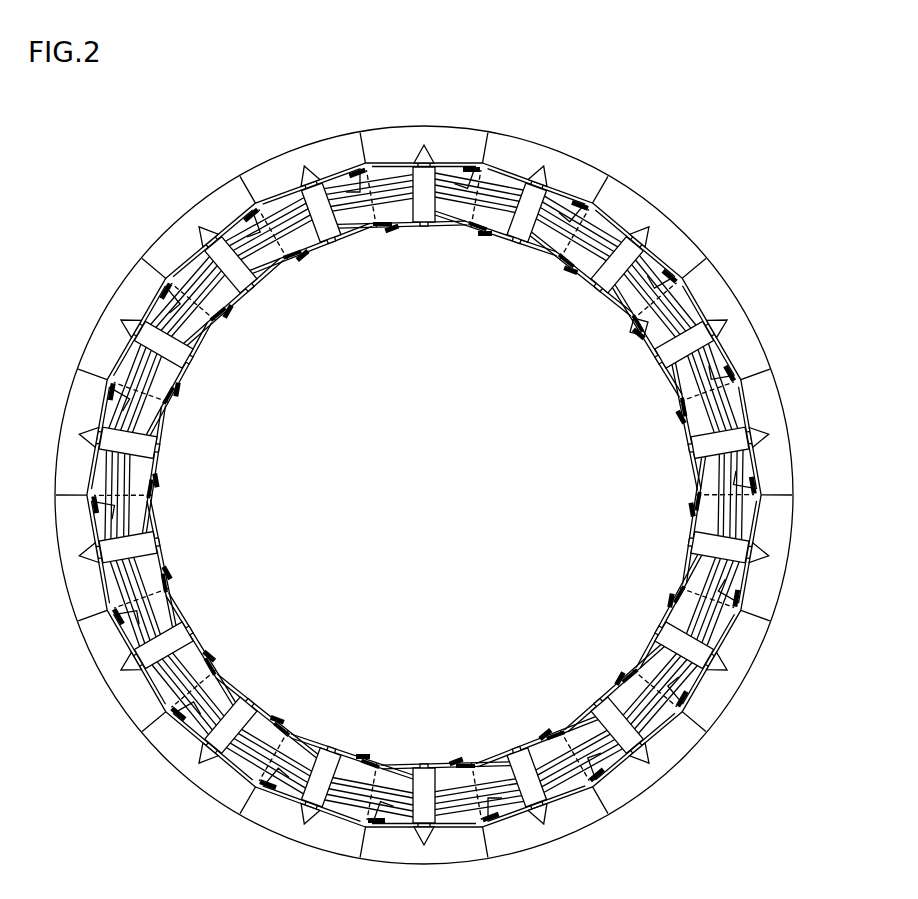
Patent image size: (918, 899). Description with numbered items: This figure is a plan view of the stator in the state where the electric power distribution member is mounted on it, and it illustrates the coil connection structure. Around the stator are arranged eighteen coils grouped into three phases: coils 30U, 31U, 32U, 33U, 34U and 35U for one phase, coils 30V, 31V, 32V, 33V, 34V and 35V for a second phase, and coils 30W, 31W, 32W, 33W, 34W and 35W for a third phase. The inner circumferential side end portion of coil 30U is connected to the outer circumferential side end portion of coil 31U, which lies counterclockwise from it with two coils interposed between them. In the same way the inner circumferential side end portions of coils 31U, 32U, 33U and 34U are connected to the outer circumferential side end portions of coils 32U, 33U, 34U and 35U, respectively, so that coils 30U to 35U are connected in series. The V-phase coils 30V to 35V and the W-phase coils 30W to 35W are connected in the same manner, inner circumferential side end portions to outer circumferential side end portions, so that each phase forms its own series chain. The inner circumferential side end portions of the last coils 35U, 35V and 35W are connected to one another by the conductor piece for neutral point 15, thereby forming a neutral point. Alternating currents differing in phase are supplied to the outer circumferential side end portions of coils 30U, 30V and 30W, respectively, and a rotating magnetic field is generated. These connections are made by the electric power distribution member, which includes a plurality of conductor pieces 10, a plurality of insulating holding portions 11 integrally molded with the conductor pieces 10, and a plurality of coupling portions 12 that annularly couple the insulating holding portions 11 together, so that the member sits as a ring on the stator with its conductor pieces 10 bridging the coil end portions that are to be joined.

The conductor piece 10 is at (283, 197).
The insulating holding portion 11 is at (223, 258).
The coupling portion 12 is at (163, 267).
The conductor piece for neutral point 15 is at (640, 325).
The coil 30U is at (546, 244).
The coil 30V is at (457, 226).
The coil 30W is at (366, 233).
The coil 31U is at (271, 250).
The coil 31V is at (190, 320).
The coil 31W is at (172, 424).
The coil 32U is at (168, 516).
The coil 32V is at (175, 600).
The coil 32W is at (225, 675).
The coil 33U is at (300, 728).
The coil 33V is at (382, 757).
The coil 33W is at (489, 758).
The coil 34U is at (592, 714).
The coil 34V is at (678, 652).
The coil 34W is at (703, 580).
The coil 35U is at (717, 482).
The coil 35V is at (677, 383).
The coil 35W is at (640, 318).